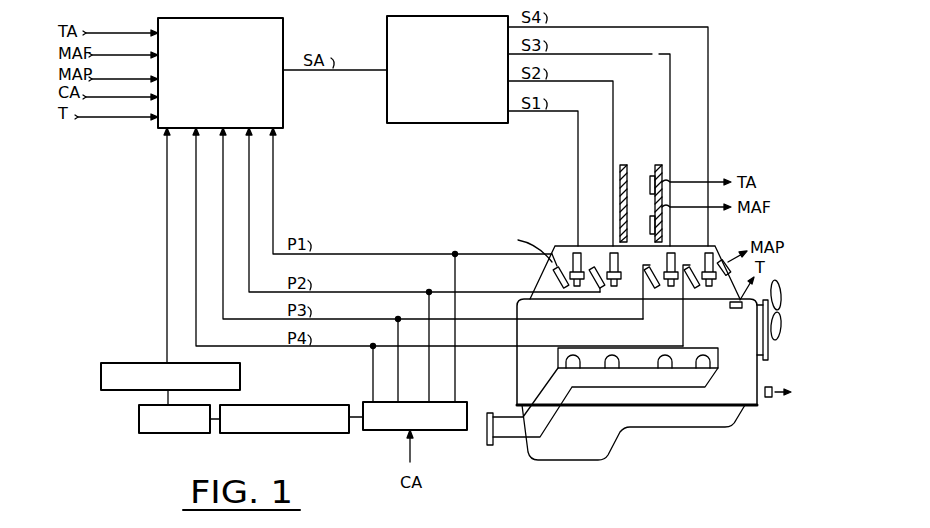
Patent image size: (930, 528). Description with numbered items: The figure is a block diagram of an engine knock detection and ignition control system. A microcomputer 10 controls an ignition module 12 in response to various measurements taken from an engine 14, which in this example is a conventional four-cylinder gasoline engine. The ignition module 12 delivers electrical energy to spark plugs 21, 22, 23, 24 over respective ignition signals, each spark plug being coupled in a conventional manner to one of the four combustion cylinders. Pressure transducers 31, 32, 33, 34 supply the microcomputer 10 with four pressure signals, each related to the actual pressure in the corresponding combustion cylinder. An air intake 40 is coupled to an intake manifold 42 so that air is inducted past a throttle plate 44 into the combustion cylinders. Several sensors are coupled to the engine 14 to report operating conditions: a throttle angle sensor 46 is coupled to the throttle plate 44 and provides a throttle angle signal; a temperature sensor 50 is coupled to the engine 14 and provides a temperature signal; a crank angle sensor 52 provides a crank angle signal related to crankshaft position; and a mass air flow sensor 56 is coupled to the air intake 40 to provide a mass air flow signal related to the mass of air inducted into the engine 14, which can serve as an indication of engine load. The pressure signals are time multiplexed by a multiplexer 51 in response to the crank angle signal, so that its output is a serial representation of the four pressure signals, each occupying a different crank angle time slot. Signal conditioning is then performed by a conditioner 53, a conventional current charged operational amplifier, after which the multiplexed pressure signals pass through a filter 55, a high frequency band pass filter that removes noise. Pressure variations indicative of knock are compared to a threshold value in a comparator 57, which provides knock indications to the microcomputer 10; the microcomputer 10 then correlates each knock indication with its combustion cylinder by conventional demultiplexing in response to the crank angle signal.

The microcomputer 10 is at (287, 33).
The ignition module 12 is at (387, 35).
The engine 14 is at (737, 158).
The spark plug 21 is at (573, 262).
The spark plug 22 is at (608, 266).
The spark plug 23 is at (672, 290).
The spark plug 24 is at (711, 290).
The pressure transducer 31 is at (554, 285).
The pressure transducer 32 is at (599, 289).
The pressure transducer 33 is at (655, 291).
The pressure transducer 34 is at (697, 289).
The air intake 40 is at (636, 161).
The intake manifold 42 is at (516, 243).
The throttle plate 44 is at (638, 215).
The throttle angle sensor 46 is at (655, 178).
The temperature sensor 50 is at (745, 297).
The multiplexer 51 is at (393, 432).
The crank angle sensor 52 is at (772, 384).
The conditioner 53 is at (280, 433).
The filter 55 is at (139, 410).
The mass air flow sensor 56 is at (652, 226).
The comparator 57 is at (141, 362).